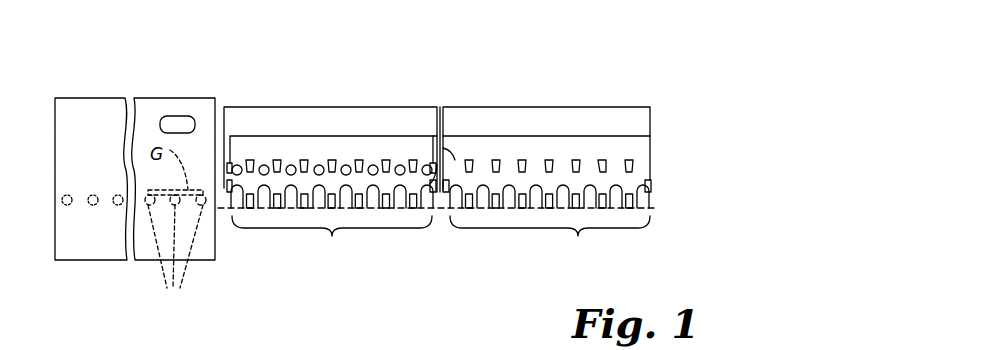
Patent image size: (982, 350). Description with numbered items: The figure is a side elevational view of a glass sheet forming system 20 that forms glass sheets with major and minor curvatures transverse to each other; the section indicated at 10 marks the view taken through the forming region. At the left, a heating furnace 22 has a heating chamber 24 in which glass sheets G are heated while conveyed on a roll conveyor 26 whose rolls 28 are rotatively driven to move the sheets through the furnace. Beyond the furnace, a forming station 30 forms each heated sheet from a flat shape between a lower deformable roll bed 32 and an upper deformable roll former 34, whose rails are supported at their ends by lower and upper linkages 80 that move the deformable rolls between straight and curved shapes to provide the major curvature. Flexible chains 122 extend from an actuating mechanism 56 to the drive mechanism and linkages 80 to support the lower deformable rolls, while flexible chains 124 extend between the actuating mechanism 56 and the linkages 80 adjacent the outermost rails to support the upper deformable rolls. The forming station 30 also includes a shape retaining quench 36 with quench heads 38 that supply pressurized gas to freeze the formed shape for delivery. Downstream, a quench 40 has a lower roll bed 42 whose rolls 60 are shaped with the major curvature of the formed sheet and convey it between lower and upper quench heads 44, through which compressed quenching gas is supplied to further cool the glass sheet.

The connector assembly section 10 is at (413, 48).
The glass sheet forming system 20 is at (461, 45).
The heating furnace 22 is at (152, 97).
The heating chamber 24 is at (177, 116).
The roll conveyor 26 is at (57, 198).
The rolls 28 is at (175, 249).
The forming station 30 is at (340, 86).
The lower deformable roll bed 32 is at (433, 200).
The upper deformable roll former 34 is at (420, 152).
The shape retaining quench 36 is at (295, 158).
The quench heads 38 is at (333, 160).
The quench 40 is at (548, 95).
The lower roll bed 42 is at (655, 188).
The quench heads 44 is at (521, 158).
The actuating mechanism 56 is at (398, 110).
The rolls 60 is at (590, 208).
The linkages 80 is at (430, 172).
The flexible chains 122 is at (443, 158).
The flexible chains 124 is at (438, 165).